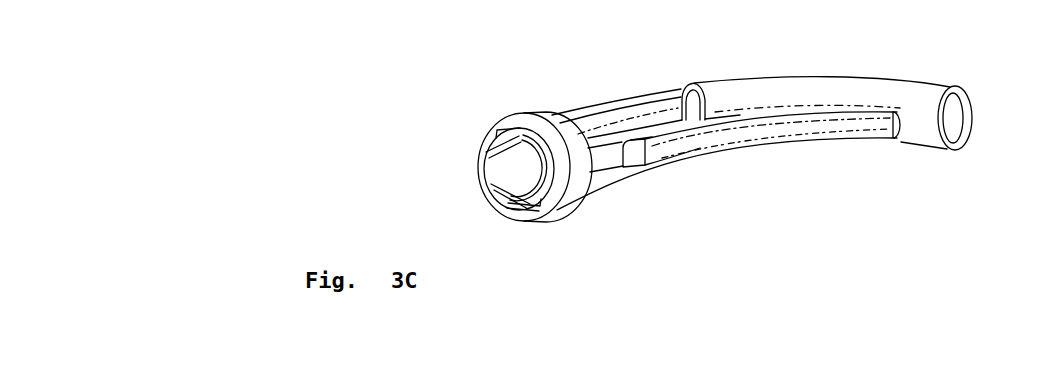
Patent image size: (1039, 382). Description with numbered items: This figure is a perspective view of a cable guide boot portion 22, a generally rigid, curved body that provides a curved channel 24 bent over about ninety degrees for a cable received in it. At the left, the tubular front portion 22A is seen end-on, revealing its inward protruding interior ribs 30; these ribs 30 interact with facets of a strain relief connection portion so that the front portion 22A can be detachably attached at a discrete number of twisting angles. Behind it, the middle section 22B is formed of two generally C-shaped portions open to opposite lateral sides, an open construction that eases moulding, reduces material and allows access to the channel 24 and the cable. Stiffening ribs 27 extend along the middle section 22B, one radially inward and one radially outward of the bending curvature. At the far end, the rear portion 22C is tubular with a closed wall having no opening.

The cable guide boot portion 22 is at (586, 84).
The front portion 22A is at (519, 111).
The middle section 22B is at (694, 80).
The rear portion 22C is at (922, 78).
The curved channel 24 is at (594, 132).
The stiffening ribs 27 is at (710, 145).
The interior ribs 30 is at (505, 184).